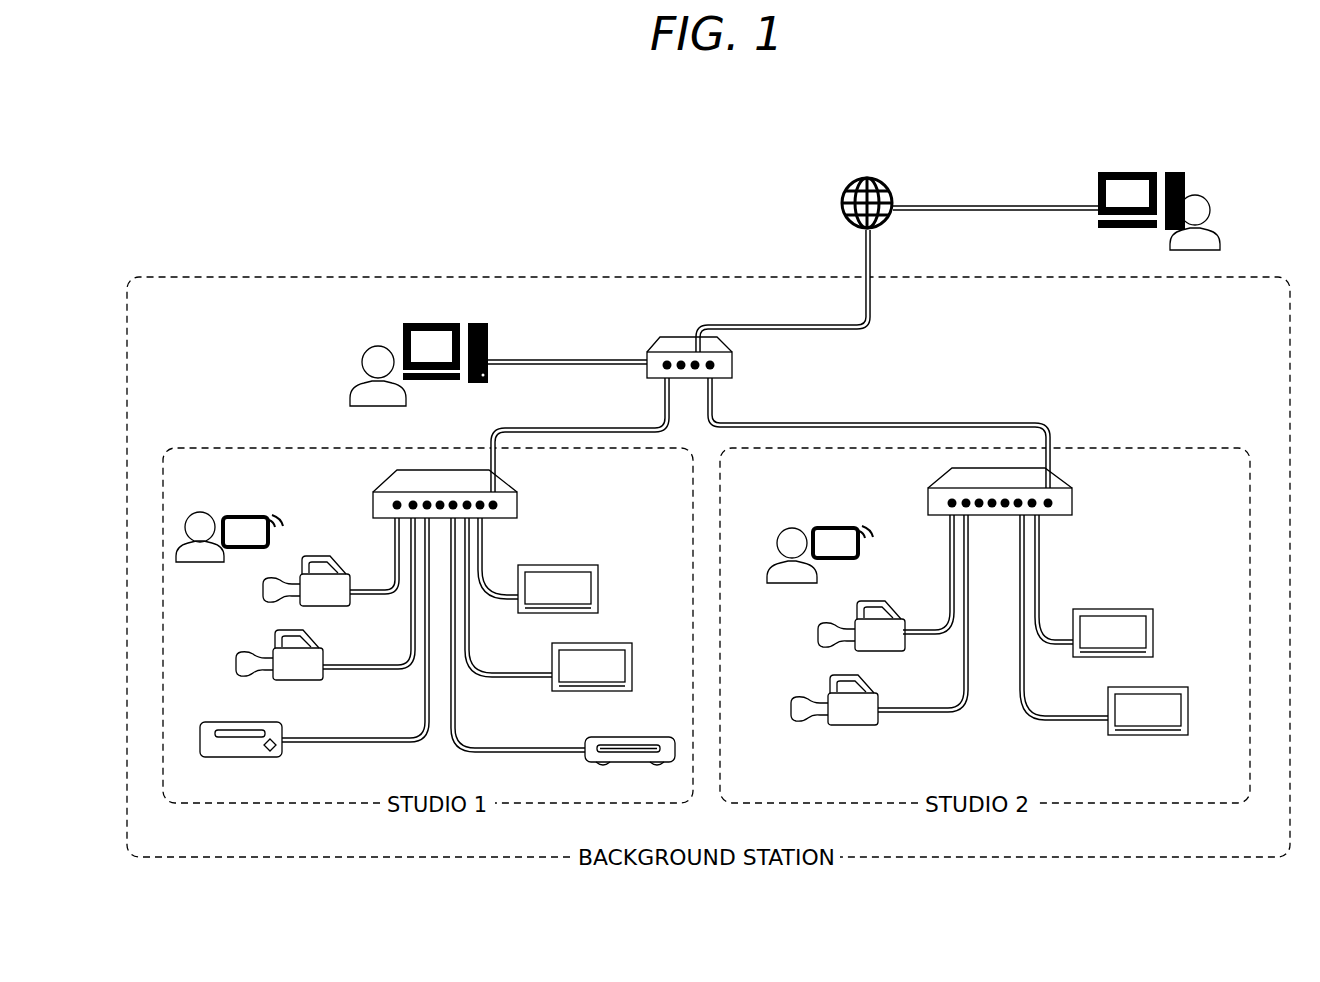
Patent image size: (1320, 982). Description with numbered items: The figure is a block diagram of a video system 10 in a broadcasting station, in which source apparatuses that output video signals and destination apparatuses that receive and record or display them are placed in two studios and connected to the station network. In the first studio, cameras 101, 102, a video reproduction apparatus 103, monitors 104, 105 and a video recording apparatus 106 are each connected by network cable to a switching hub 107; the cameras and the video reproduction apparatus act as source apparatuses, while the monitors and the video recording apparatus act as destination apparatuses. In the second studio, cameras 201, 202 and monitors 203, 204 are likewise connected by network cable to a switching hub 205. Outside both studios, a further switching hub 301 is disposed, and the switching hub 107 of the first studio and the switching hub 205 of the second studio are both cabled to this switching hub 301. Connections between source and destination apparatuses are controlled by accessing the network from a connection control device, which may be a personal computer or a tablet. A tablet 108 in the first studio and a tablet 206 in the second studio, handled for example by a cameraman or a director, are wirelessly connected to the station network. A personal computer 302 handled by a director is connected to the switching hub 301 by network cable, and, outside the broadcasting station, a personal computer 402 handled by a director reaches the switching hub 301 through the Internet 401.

The video system 10 is at (1119, 389).
The camera 101 is at (338, 607).
The camera 102 is at (310, 680).
The video reproduction apparatus 103 is at (252, 757).
The monitor 104 is at (535, 613).
The monitor 105 is at (575, 692).
The video recording apparatus 106 is at (630, 762).
The switching hub 107 is at (519, 507).
The tablet 108 is at (245, 517).
The camera 201 is at (890, 651).
The camera 202 is at (852, 725).
The monitor 203 is at (1085, 660).
The monitor 204 is at (1120, 735).
The switching hub 205 is at (1074, 506).
The tablet 206 is at (832, 528).
The switching hub 301 is at (734, 366).
The personal computer 302 is at (435, 323).
The Internet 401 is at (867, 178).
The personal computer 402 is at (1128, 172).